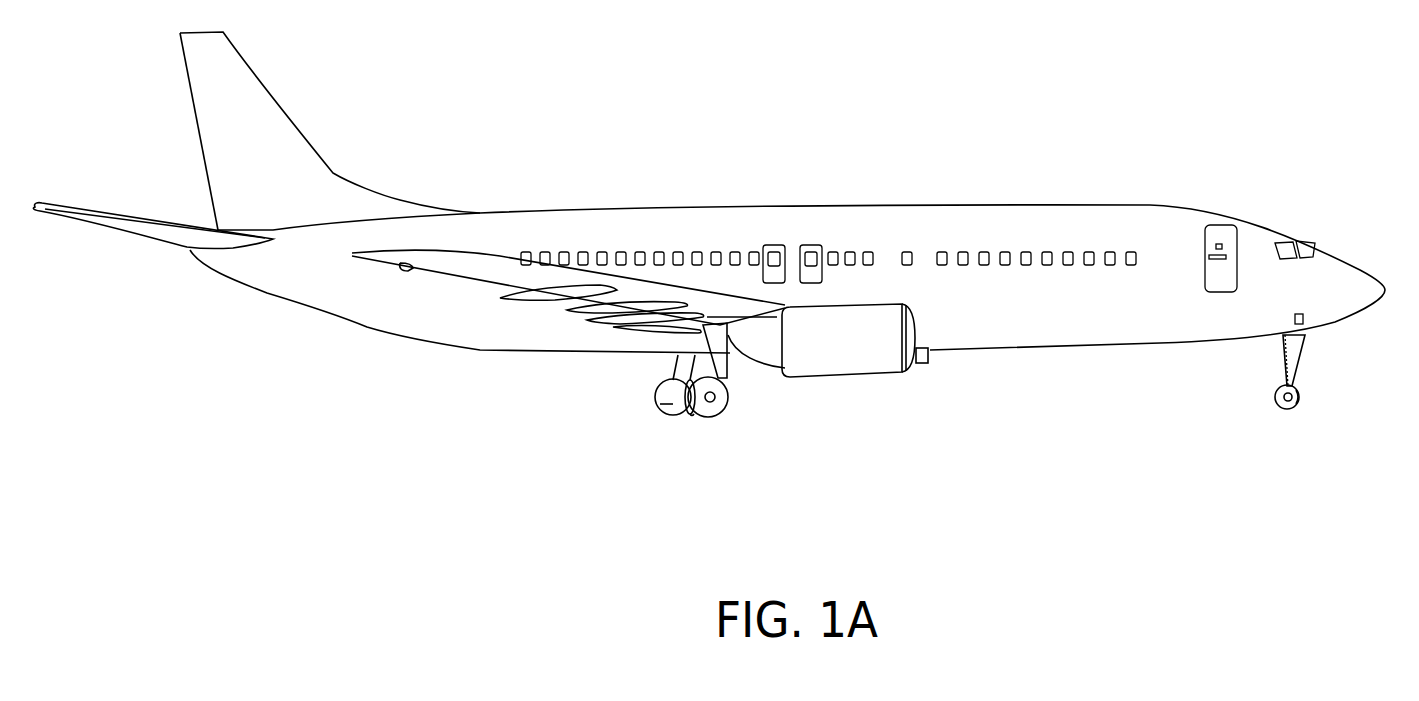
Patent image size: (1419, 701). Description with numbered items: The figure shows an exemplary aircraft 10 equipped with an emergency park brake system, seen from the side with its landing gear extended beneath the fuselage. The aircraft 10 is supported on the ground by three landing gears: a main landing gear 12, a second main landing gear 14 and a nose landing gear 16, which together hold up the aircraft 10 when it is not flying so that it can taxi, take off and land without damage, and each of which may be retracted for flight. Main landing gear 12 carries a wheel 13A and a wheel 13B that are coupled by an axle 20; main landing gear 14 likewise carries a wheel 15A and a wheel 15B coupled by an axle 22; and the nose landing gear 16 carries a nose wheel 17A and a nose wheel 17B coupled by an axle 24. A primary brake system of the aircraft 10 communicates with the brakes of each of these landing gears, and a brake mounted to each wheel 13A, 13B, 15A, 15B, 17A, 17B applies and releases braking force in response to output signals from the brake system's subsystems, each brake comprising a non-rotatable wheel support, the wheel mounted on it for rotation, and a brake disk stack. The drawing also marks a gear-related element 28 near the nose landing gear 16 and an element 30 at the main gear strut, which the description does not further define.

The aircraft 10 is at (914, 88).
The main landing gear 12 is at (655, 394).
The wheel 13A is at (658, 381).
The wheel 13B is at (676, 416).
The main landing gear 14 is at (715, 422).
The wheel 15A is at (729, 397).
The wheel 15B is at (691, 418).
The nose landing gear 16 is at (1291, 402).
The nose wheel 17A is at (1276, 399).
The nose wheel 17B is at (1300, 397).
The axle 20 is at (658, 404).
The axle 22 is at (711, 403).
The axle 24 is at (1289, 410).
The nose gear strut 28 is at (1270, 343).
The main gear strut 30 is at (728, 333).